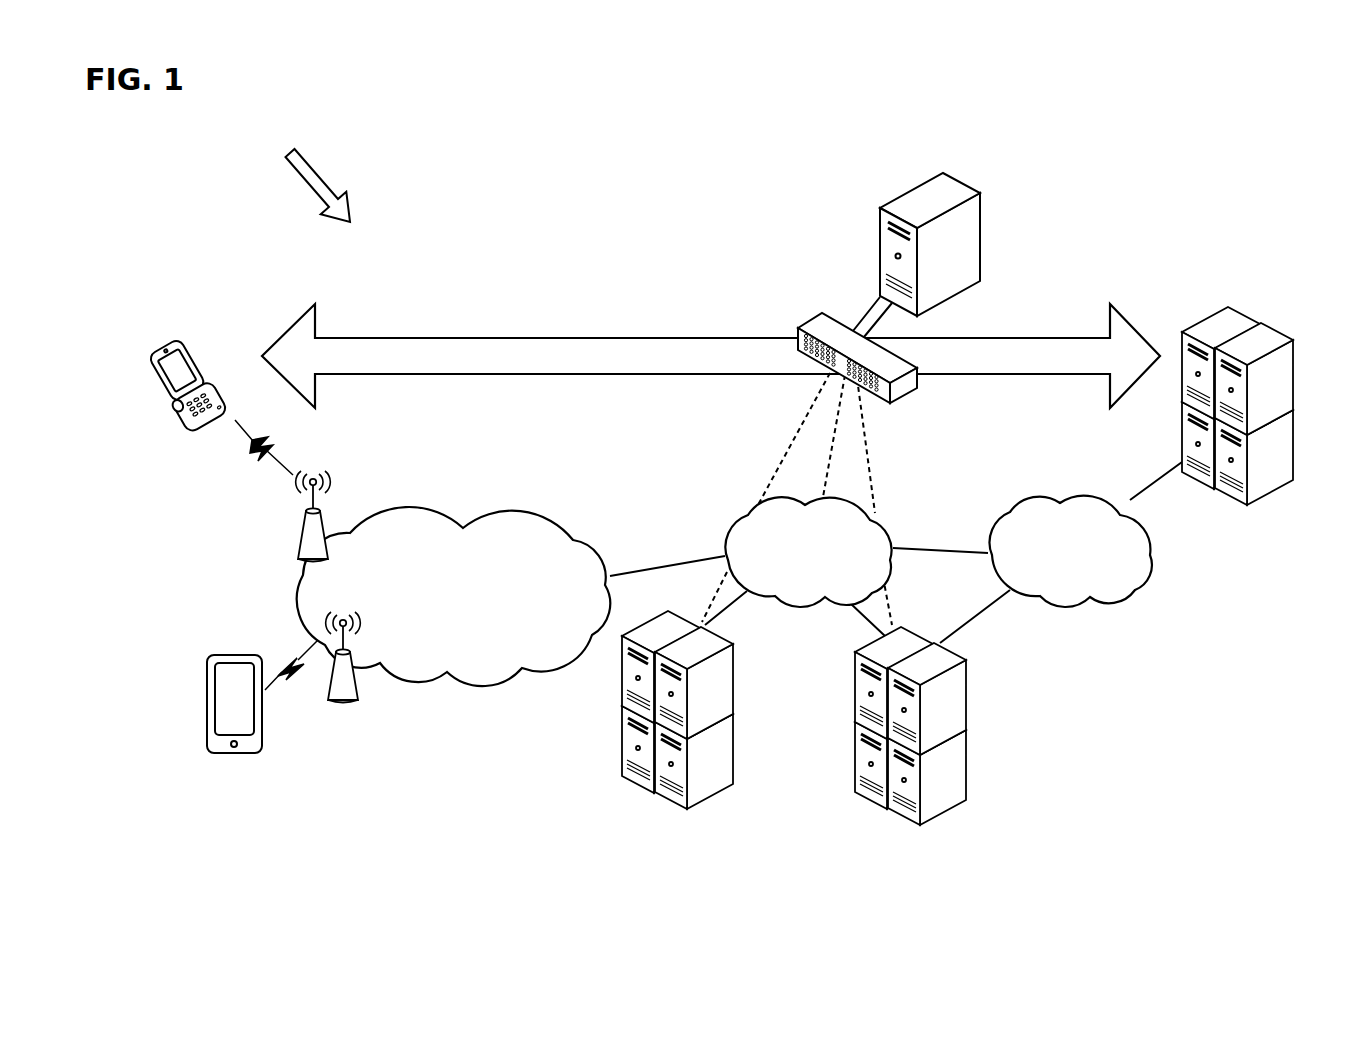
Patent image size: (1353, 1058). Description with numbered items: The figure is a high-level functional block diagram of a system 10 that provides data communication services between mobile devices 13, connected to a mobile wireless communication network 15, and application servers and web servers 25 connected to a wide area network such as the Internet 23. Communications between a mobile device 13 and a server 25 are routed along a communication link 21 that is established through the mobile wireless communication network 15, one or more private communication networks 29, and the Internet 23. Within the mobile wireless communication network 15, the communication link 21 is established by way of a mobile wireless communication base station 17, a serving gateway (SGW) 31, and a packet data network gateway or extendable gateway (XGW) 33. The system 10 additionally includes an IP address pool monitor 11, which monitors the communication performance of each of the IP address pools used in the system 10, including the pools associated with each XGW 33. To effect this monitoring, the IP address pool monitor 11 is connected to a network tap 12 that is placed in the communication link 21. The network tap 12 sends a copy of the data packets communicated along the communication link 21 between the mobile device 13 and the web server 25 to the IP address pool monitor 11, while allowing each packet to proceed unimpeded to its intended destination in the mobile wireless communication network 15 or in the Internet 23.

The system 10 is at (302, 170).
The IP address pool monitor 11 is at (981, 192).
The network tap 12 is at (905, 403).
The mobile device 13 is at (170, 405).
The mobile wireless communication network 15 is at (430, 682).
The mobile wireless communication base station 17 is at (298, 545).
The communication link 21 is at (1017, 338).
The Internet 23 is at (1115, 608).
The application servers and web servers 25 is at (1235, 505).
The private communication network 29 is at (800, 608).
The serving gateway (SGW) 31 is at (695, 808).
The extendable gateway (XGW) 33 is at (858, 790).